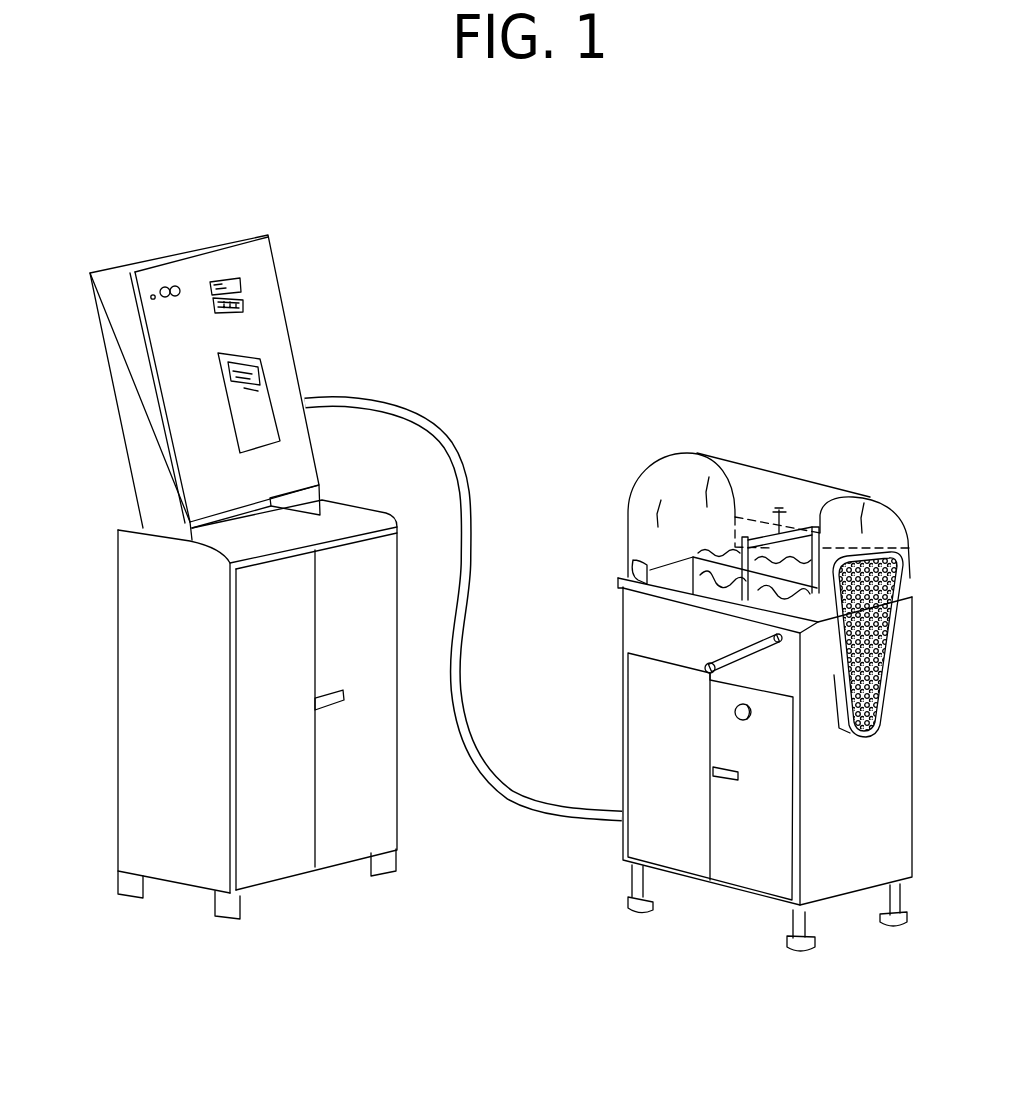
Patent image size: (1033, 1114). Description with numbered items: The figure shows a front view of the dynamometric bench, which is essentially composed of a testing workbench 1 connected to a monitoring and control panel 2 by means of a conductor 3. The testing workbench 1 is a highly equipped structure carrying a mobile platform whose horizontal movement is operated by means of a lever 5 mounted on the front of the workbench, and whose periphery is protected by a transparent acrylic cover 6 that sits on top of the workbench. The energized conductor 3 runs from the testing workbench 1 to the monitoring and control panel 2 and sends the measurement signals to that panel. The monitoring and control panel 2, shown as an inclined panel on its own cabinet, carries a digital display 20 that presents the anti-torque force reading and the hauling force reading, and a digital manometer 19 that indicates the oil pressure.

The testing workbench 1 is at (830, 873).
The monitoring and control panel 2 is at (190, 390).
The conductor 3 is at (521, 806).
The lever 5 is at (747, 653).
The transparent acrylic cover 6 is at (738, 480).
The digital manometer 19 is at (242, 302).
The digital display 20 is at (240, 278).